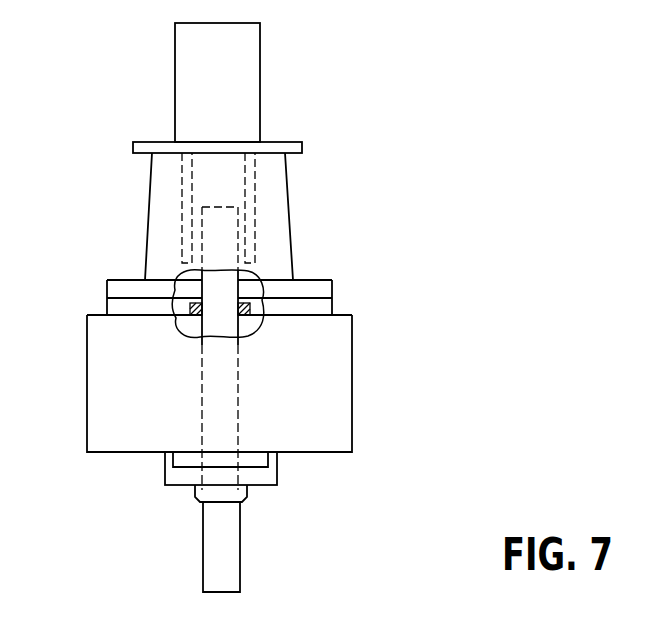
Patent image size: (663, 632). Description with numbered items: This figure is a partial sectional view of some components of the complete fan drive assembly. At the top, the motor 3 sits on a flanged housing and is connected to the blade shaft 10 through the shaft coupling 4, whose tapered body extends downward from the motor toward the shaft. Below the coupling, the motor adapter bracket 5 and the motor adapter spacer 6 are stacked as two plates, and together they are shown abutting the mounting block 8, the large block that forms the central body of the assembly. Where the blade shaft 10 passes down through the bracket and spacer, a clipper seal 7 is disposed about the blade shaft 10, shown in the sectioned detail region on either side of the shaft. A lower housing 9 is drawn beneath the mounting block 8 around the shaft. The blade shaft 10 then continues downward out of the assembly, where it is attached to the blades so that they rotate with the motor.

The motor 3 is at (260, 77).
The shaft coupling 4 is at (255, 185).
The motor adapter bracket 5 is at (332, 283).
The motor adapter spacer 6 is at (107, 312).
The clipper seal 7 is at (193, 308).
The mounting block 8 is at (87, 393).
The lower housing 9 is at (277, 473).
The blade shaft 10 is at (203, 553).